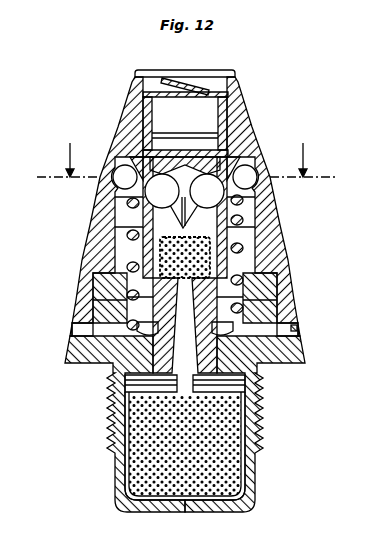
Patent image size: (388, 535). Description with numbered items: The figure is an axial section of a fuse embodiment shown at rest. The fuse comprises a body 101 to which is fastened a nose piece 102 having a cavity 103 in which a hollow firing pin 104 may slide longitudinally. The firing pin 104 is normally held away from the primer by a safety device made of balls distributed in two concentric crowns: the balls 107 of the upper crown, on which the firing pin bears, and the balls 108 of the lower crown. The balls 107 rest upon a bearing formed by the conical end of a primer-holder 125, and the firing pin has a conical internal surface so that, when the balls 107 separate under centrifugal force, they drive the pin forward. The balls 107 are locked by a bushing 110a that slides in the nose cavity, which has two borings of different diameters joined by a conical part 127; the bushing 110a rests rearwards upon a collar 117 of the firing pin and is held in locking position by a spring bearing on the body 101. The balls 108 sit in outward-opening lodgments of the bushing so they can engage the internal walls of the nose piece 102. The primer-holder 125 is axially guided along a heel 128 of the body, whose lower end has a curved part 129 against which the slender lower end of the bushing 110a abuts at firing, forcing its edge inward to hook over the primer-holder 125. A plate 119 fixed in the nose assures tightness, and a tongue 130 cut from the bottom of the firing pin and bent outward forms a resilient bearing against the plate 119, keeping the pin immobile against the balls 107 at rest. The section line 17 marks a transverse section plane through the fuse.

The body 101 is at (302, 356).
The nose piece 102 is at (132, 117).
The cavity 103 is at (120, 257).
The firing pin 104 is at (221, 122).
The balls of the upper crown 107 is at (211, 199).
The balls of the lower crown 108 is at (246, 176).
The bushing 110a is at (118, 201).
The collar 117 is at (246, 250).
The plate 119 is at (213, 72).
The primer-holder 125 is at (280, 296).
The conical part 127 is at (113, 234).
The heel 128 is at (156, 332).
The curved part 129 is at (290, 328).
The tongue 130 is at (212, 92).
The section line 17- 17 is at (187, 164).